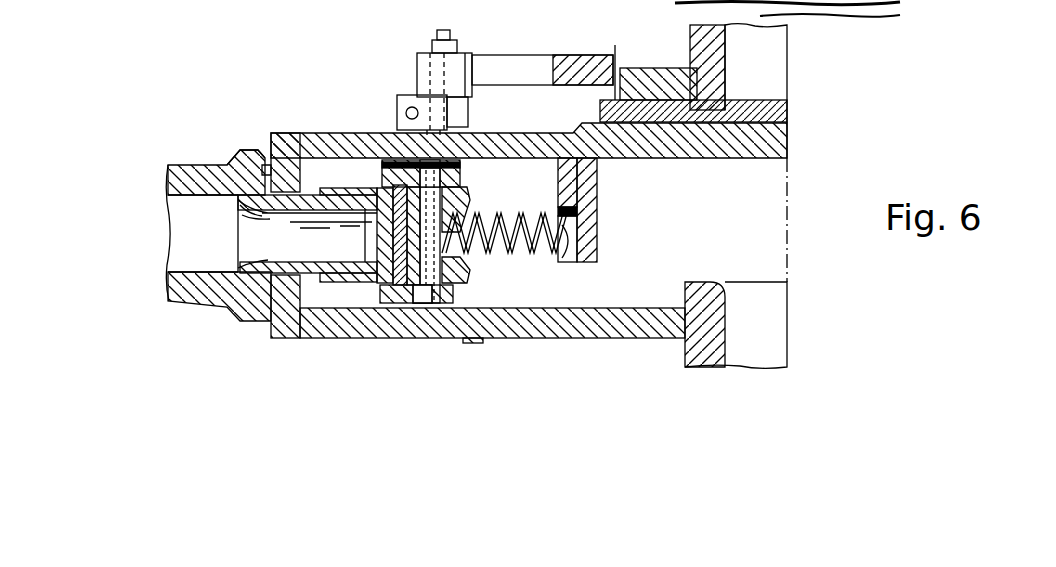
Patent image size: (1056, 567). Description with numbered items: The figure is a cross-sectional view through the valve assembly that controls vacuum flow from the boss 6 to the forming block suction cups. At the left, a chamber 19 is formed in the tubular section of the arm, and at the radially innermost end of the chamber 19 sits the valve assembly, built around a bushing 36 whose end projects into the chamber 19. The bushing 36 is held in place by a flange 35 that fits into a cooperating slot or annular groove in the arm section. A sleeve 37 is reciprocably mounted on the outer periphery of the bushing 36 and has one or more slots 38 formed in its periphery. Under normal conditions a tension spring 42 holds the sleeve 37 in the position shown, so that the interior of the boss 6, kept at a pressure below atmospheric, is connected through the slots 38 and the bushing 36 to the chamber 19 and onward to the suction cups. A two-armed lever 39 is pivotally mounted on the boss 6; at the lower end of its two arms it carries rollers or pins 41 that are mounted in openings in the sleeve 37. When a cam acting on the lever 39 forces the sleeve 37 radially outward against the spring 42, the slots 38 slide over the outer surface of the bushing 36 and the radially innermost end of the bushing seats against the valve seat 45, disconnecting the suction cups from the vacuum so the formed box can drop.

The boss 6 is at (757, 68).
The chamber 19 is at (185, 232).
The flange 35 is at (260, 148).
The bushing 36 is at (304, 198).
The sleeve 37 is at (353, 285).
The slots 38 is at (378, 236).
The two-armed lever 39 is at (528, 57).
The rollers or pins 41 is at (452, 180).
The tension spring 42 is at (530, 210).
The valve seat 45 is at (452, 273).